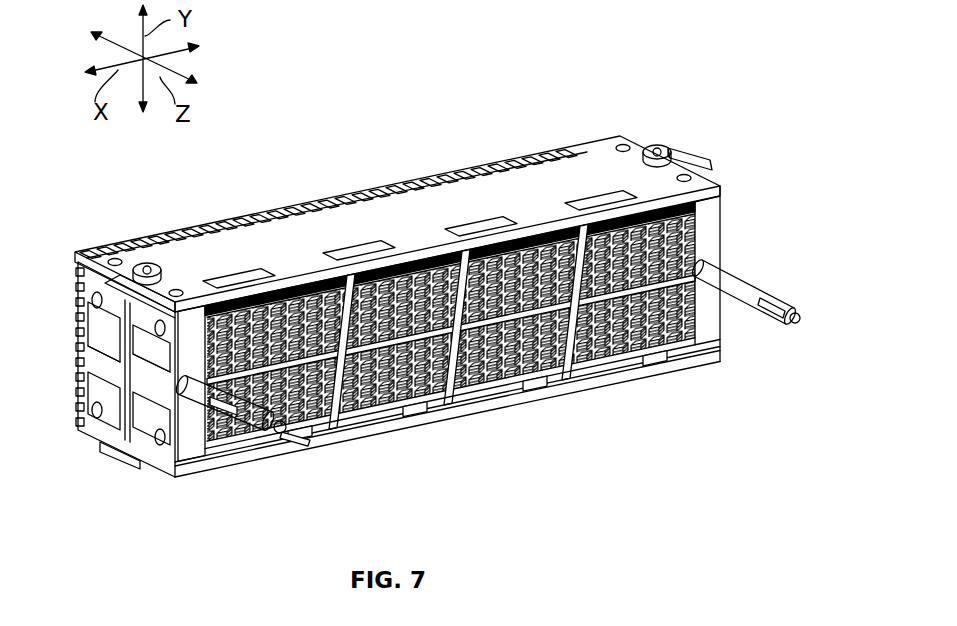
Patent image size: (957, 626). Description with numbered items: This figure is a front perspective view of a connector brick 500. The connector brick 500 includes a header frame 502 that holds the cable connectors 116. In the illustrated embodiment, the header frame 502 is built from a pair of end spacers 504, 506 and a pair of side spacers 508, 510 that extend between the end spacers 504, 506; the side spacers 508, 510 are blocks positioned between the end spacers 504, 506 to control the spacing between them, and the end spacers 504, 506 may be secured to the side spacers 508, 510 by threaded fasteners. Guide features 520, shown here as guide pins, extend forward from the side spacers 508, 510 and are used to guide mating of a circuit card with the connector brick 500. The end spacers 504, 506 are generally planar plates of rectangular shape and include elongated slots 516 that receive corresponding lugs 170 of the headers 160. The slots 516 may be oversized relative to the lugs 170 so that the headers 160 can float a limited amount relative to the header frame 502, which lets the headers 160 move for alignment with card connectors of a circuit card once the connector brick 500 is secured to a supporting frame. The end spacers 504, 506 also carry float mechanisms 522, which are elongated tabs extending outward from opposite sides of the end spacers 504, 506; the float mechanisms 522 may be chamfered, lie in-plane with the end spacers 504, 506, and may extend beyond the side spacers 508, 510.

The connector brick 500 is at (488, 115).
The header frame 502 is at (724, 187).
The end spacer 504 is at (612, 115).
The end spacer 506 is at (195, 470).
The side spacer 508 is at (720, 233).
The side spacer 510 is at (187, 435).
The elongated slot 516 is at (258, 268).
The lug 170 is at (232, 262).
The guide feature 520 is at (740, 282).
The float mechanism 522 is at (700, 150).
The header 160 is at (270, 462).
The cable connector 116 is at (310, 420).